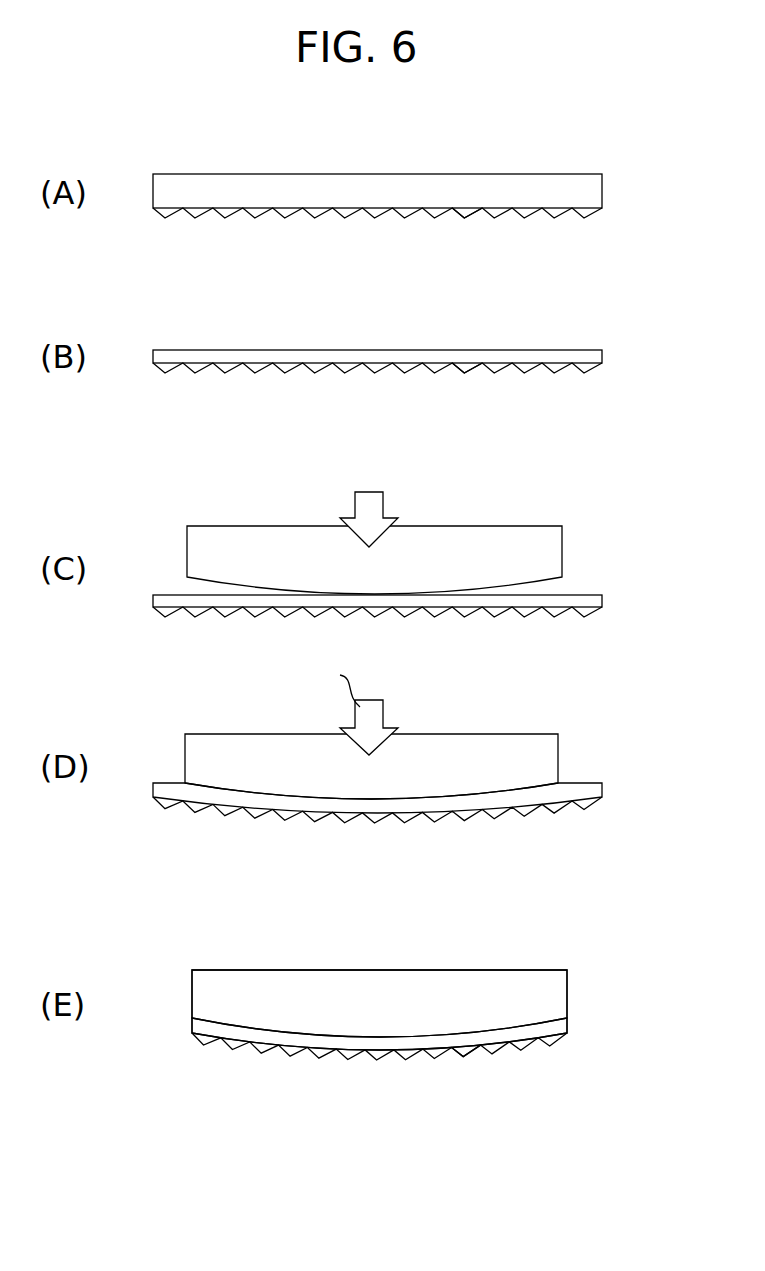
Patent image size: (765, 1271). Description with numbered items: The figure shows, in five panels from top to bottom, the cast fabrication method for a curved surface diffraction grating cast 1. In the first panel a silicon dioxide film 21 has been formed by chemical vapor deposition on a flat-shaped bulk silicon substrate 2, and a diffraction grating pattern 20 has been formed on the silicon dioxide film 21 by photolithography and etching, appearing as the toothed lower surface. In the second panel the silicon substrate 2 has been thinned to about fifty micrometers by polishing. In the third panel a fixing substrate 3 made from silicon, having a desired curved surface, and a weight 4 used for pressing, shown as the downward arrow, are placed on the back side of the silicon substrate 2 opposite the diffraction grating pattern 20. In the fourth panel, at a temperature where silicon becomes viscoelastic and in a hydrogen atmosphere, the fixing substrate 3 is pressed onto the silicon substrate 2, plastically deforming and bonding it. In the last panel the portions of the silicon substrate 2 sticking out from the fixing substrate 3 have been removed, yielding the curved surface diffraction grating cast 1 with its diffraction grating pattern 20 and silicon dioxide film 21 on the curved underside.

The curved surface diffraction grating cast 1 is at (620, 1022).
The silicon substrate 2 is at (210, 183).
The fixing substrate 3 is at (233, 540).
The weight 4 is at (363, 503).
The diffraction grating pattern 20 is at (335, 217).
The silicon dioxide film 21 is at (473, 215).